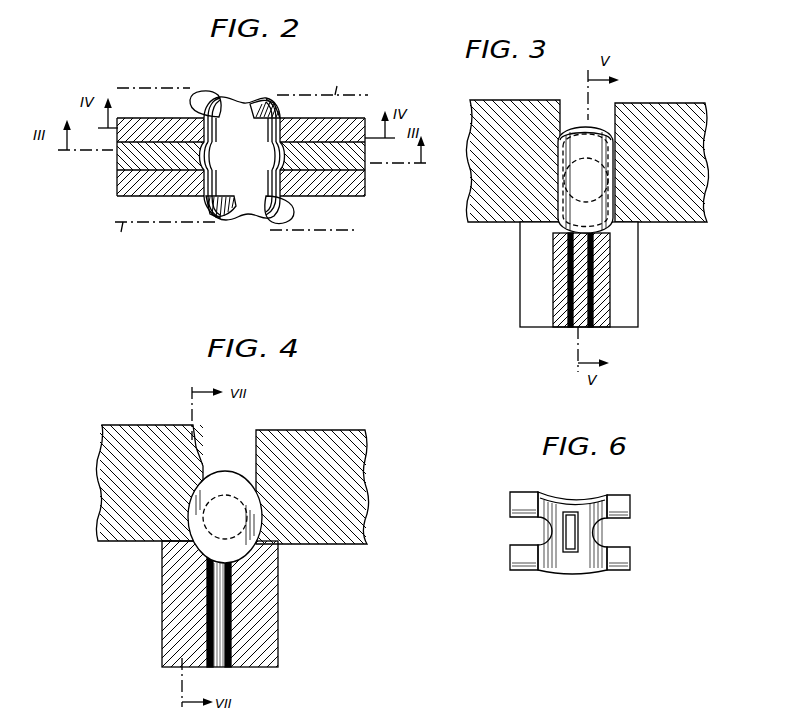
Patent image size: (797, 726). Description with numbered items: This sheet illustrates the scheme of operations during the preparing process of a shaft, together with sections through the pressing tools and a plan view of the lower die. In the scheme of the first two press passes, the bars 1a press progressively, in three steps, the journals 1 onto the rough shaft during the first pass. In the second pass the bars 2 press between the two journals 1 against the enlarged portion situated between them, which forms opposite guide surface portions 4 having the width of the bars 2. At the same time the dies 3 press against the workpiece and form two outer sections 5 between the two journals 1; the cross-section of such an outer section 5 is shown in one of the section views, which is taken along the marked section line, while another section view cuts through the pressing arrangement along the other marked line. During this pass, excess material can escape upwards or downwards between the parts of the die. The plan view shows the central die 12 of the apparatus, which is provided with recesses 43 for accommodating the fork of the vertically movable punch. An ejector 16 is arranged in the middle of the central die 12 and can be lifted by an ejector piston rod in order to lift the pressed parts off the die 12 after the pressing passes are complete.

In FIG. 2, the journals 1 is at (276, 110).
In FIG. 2, the bars 1a is at (241, 160).
In FIG. 2, the bars 2 is at (144, 133).
In FIG. 3, the bars 2 is at (495, 218).
In FIG. 2, the dies 3 is at (118, 182).
In FIG. 4, the dies 3 is at (113, 487).
In FIG. 2, the guide surface portions 4 is at (163, 196).
In FIG. 3, the guide surface portions 4 is at (611, 157).
In FIG. 2, the outer sections 5 is at (204, 92).
In FIG. 4, the outer sections 5 is at (247, 497).
In FIG. 3, the central die 12 is at (603, 311).
In FIG. 4, the central die 12 is at (268, 597).
In FIG. 6, the central die 12 is at (510, 505).
In FIG. 3, the ejector 16 is at (567, 280).
In FIG. 4, the ejector 16 is at (218, 667).
In FIG. 6, the recesses 43 is at (543, 528).